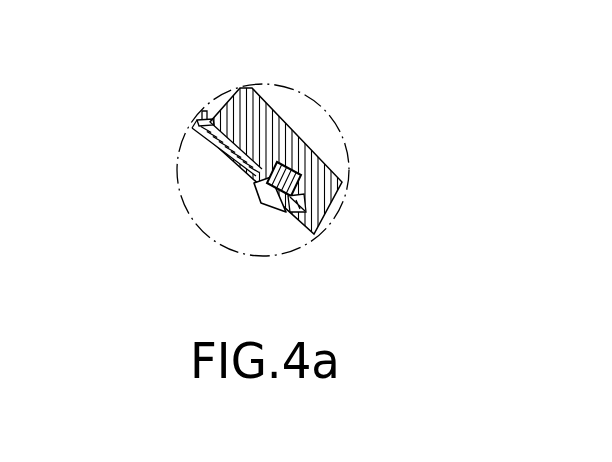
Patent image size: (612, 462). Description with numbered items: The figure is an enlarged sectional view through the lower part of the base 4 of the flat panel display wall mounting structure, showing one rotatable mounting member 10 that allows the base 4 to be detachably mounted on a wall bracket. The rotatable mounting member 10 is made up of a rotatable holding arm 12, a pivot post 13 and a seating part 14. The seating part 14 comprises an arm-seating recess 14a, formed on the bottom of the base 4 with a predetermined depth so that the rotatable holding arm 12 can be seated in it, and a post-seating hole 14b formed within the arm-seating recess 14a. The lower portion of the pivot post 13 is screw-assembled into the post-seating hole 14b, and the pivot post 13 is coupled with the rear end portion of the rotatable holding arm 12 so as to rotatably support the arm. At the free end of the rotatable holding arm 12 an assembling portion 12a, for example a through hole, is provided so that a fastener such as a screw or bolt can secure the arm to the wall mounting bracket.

The base 4 is at (215, 101).
The rotatable mounting member 10 is at (314, 252).
The rotatable holding arm 12 is at (257, 167).
The assembling portion 12a is at (210, 142).
The pivot post 13 is at (272, 208).
The seating part 14 is at (470, 153).
The arm-seating recess 14a is at (150, 165).
The post-seating hole 14b is at (306, 202).